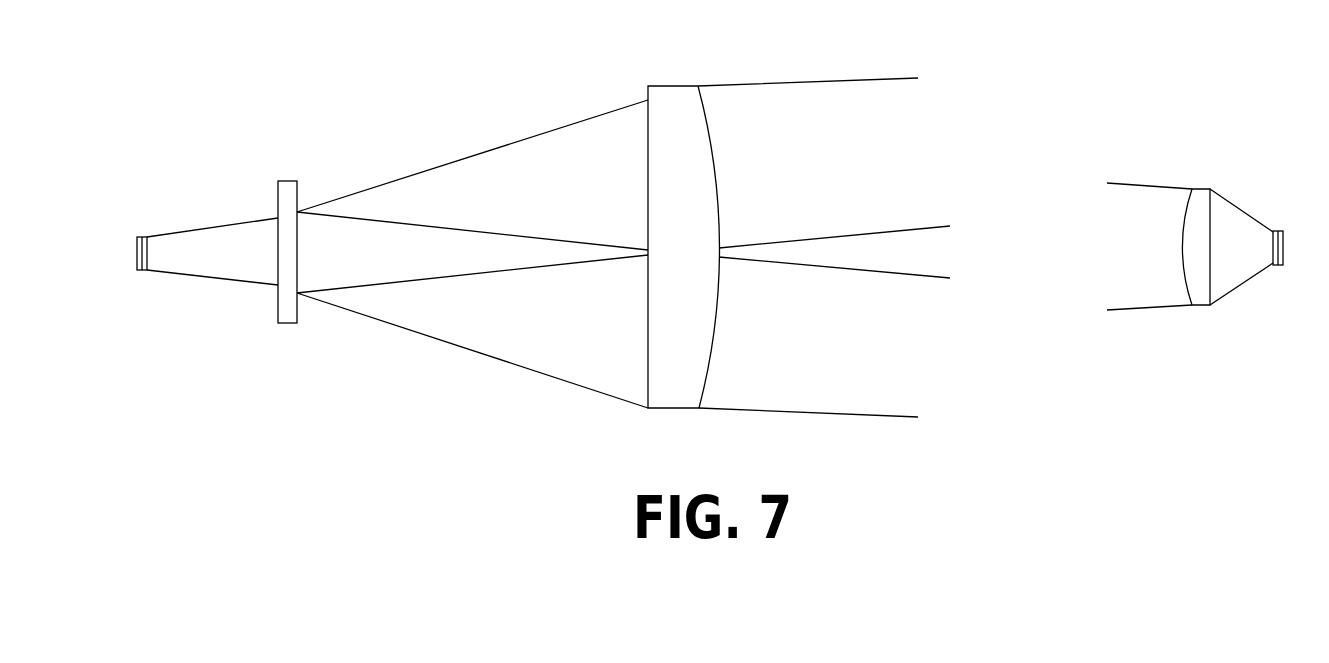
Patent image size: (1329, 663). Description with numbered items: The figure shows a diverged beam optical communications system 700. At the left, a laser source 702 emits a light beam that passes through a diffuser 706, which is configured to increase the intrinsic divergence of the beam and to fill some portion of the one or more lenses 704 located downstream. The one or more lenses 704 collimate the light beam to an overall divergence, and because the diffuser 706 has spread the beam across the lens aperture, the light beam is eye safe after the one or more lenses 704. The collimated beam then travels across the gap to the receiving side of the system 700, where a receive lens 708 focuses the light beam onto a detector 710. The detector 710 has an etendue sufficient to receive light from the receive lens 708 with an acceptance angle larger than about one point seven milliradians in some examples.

The diverged beam optical communications system 700 is at (455, 73).
The laser source 702 is at (140, 235).
The one or more lenses 704 is at (672, 83).
The diffuser 706 is at (277, 190).
The receive lens 708 is at (1200, 186).
The detector 710 is at (1277, 270).